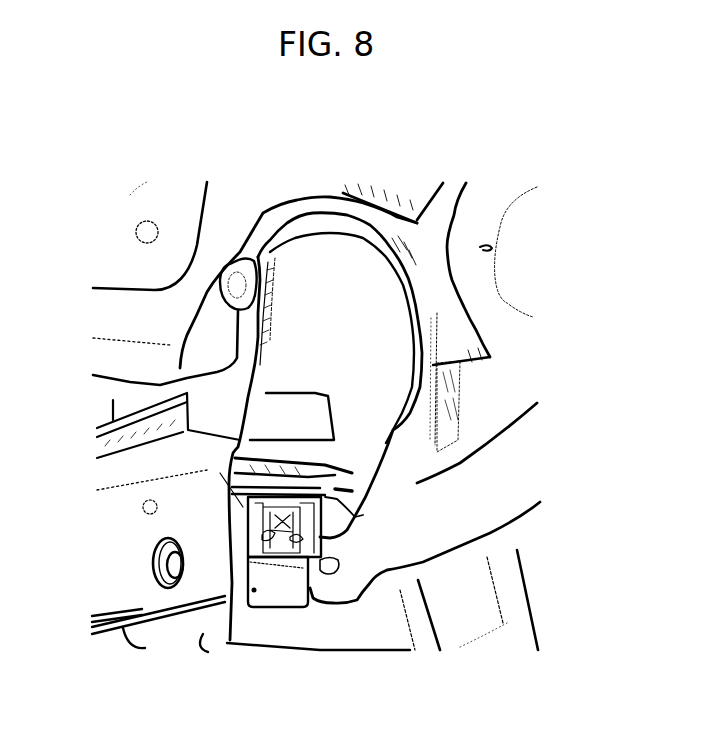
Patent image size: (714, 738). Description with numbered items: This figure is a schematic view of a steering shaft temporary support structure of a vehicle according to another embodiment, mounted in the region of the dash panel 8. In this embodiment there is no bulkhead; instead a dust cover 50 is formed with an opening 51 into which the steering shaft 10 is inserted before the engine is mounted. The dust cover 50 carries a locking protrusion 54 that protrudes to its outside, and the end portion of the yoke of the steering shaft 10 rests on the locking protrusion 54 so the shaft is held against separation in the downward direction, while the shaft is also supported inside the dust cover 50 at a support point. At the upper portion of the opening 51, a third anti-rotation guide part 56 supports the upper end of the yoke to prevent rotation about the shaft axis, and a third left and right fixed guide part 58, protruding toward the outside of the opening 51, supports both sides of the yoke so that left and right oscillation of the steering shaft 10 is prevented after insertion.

The dash panel 8 is at (507, 372).
The steering shaft 10 is at (232, 572).
The dust cover 50 is at (420, 313).
The opening 51 is at (330, 507).
The locking protrusion 54 is at (268, 490).
The third anti-rotation guide part 56 is at (367, 513).
The third left and right fixed guide part 58 is at (352, 473).